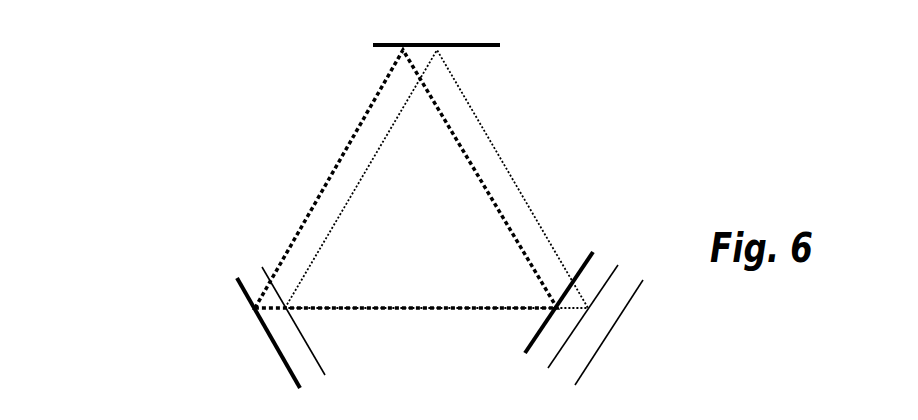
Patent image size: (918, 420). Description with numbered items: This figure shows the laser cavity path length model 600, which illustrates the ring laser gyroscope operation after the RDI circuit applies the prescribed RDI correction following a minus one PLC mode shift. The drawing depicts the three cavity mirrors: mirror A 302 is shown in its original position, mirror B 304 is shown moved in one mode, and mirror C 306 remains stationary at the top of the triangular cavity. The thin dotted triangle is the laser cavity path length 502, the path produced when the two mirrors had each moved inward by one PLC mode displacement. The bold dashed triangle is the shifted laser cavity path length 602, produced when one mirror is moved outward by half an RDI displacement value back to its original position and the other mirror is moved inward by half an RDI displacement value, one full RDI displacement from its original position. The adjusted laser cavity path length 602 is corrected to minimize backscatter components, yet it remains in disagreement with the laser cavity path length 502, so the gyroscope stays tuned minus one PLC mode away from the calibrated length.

The laser cavity path length model 600 is at (645, 57).
The mirror C 306 is at (372, 45).
The mirror A in original position 302 is at (292, 375).
The mirror B moved in 1 mode 304 is at (525, 348).
The laser cavity path length 502 is at (503, 162).
The laser cavity path length 602 is at (452, 307).